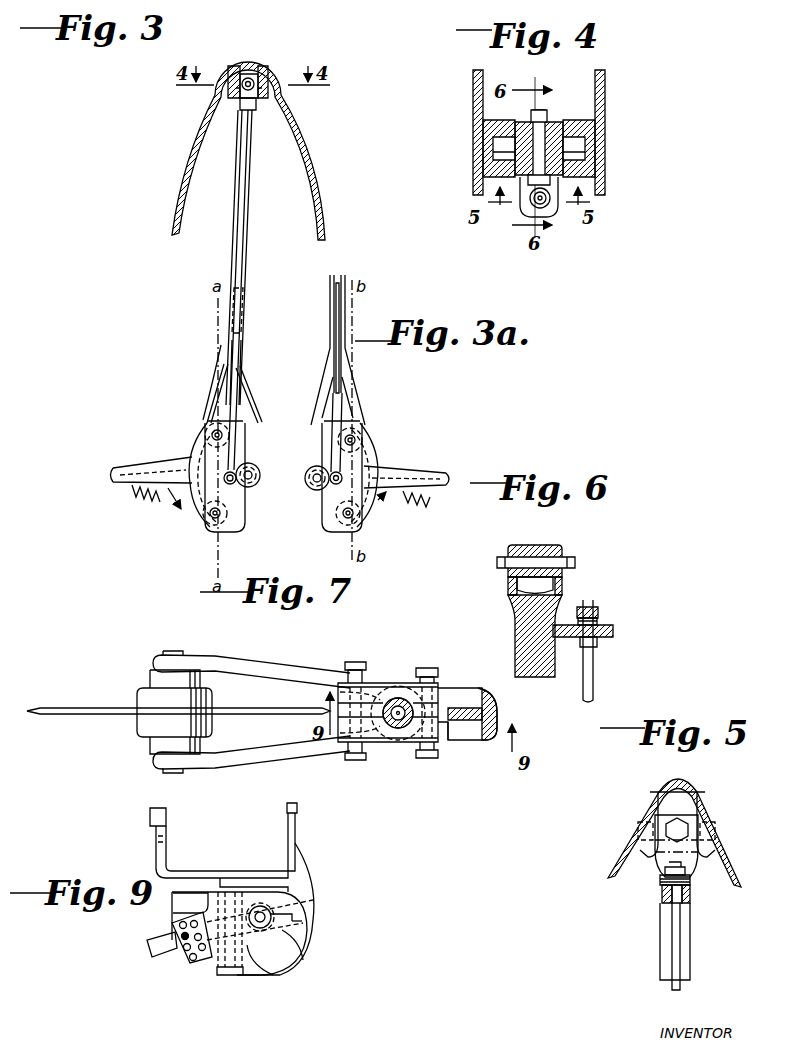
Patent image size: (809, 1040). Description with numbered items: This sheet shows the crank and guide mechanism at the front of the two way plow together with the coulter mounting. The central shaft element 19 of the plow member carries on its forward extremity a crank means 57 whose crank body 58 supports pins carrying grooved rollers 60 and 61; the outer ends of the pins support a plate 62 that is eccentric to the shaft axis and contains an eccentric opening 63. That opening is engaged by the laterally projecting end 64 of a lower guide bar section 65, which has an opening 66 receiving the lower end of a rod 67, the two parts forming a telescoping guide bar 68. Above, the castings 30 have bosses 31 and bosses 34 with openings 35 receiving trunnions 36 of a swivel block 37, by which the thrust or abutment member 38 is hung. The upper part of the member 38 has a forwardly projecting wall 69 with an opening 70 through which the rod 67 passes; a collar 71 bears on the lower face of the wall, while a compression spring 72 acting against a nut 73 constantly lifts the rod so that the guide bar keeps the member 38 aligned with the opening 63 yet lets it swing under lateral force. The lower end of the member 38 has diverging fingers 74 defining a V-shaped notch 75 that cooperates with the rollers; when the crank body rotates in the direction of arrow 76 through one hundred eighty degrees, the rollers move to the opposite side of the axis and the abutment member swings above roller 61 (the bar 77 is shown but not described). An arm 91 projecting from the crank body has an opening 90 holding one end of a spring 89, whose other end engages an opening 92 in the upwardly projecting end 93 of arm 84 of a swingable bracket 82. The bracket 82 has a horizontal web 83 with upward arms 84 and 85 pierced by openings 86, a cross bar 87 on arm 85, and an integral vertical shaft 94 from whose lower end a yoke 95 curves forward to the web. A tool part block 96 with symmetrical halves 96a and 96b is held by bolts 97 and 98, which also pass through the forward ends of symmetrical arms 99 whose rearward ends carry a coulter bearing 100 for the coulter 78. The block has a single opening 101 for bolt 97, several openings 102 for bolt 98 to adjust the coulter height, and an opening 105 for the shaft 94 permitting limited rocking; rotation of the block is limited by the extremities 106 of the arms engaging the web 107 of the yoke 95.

In FIG. 3, the central shaft element 19 is at (257, 470).
In FIG. 3A, the central shaft element 19 is at (316, 491).
In FIG. 3, the castings 30 is at (186, 184).
In FIG. 5, the bosses 31 is at (618, 862).
In FIG. 3, the bosses 34 is at (232, 72).
In FIG. 4, the bosses 34 is at (474, 131).
In FIG. 5, the bosses 34 is at (648, 815).
In FIG. 4, the openings 35 is at (492, 157).
In FIG. 3, the trunnions 36 is at (266, 96).
In FIG. 4, the trunnions 36 is at (500, 149).
In FIG. 5, the trunnions 36 is at (638, 833).
In FIG. 4, the swivel block 37 is at (553, 136).
In FIG. 6, the swivel block 37 is at (540, 546).
In FIG. 3, the thrust member or abutment member 38 is at (251, 192).
In FIG. 6, the thrust member or abutment member 38 is at (522, 636).
In FIG. 5, the thrust member or abutment member 38 is at (690, 937).
In FIG. 3, the crank means 57 is at (164, 467).
In FIG. 3A, the crank means 57 is at (382, 474).
In FIG. 3, the crank body 58 is at (197, 497).
In FIG. 3A, the crank body 58 is at (376, 464).
In FIG. 3, the roller 60 is at (206, 434).
In FIG. 3A, the roller 60 is at (358, 520).
In FIG. 3, the roller 61 is at (205, 524).
In FIG. 3A, the roller 61 is at (358, 438).
In FIG. 3, the plate 62 is at (228, 533).
In FIG. 3A, the plate 62 is at (330, 533).
In FIG. 3, the eccentric opening 63 is at (236, 497).
In FIG. 3, the laterally projecting end 64 is at (224, 476).
In FIG. 3, the guide bar section 65 is at (239, 364).
In FIG. 3, the opening 66 is at (244, 326).
In FIG. 3, the rod 67 is at (247, 235).
In FIG. 4, the rod 67 is at (533, 205).
In FIG. 6, the rod 67 is at (594, 678).
In FIG. 5, the rod 67 is at (675, 958).
In FIG. 3, the telescoping guide bar 68 is at (234, 250).
In FIG. 3A, the telescoping guide bar 68 is at (333, 313).
In FIG. 3, the forwardly projecting wall 69 is at (240, 104).
In FIG. 6, the forwardly projecting wall 69 is at (613, 630).
In FIG. 5, the forwardly projecting wall 69 is at (661, 899).
In FIG. 6, the opening 70 is at (603, 627).
In FIG. 5, the opening 70 is at (691, 895).
In FIG. 6, the collar 71 is at (598, 642).
In FIG. 6, the compression spring 72 is at (579, 617).
In FIG. 5, the compression spring 72 is at (660, 881).
In FIG. 6, the nut 73 is at (594, 608).
In FIG. 3, the diverging fingers 74 is at (252, 402).
In FIG. 3, the V-shaped notch 75 is at (219, 384).
In FIG. 3, the arrow 76 is at (180, 548).
In FIG. 3, the link bar 77 is at (212, 400).
In FIG. 7, the coulter wheel or disc 78 is at (48, 712).
In FIG. 9, the swingable bracket 82 is at (306, 895).
In FIG. 9, the horizontal web 83 is at (190, 884).
In FIG. 9, the arm 84 is at (300, 866).
In FIG. 9, the arm 85 is at (158, 862).
In FIG. 9, the openings 86 is at (165, 842).
In FIG. 9, the cross bar 87 is at (150, 812).
In FIG. 3, the spring 89 is at (132, 497).
In FIG. 3A, the spring 89 is at (424, 501).
In FIG. 3, the opening 90 is at (113, 478).
In FIG. 3A, the opening 90 is at (455, 480).
In FIG. 3, the arm 91 is at (130, 467).
In FIG. 3A, the arm 91 is at (440, 472).
In FIG. 9, the opening 92 is at (297, 810).
In FIG. 9, the upwardly projecting end 93 is at (287, 806).
In FIG. 7, the vertical shaft or column 94 is at (397, 700).
In FIG. 9, the vertical shaft or column 94 is at (230, 977).
In FIG. 7, the yoke 95 is at (498, 699).
In FIG. 9, the yoke 95 is at (308, 946).
In FIG. 9, the tool part block 96 is at (263, 977).
In FIG. 7, the block half 96a is at (368, 690).
In FIG. 9, the block half 96a is at (180, 910).
In FIG. 7, the block half 96b is at (380, 741).
In FIG. 7, the bolt 97 is at (430, 670).
In FIG. 9, the bolt 97 is at (271, 913).
In FIG. 7, the bolt 98 is at (350, 664).
In FIG. 9, the bolt 98 is at (184, 945).
In FIG. 7, the symmetrical arms 99 is at (264, 668).
In FIG. 9, the symmetrical arms 99 is at (152, 950).
In FIG. 7, the coulter bearing 100 is at (147, 744).
In FIG. 9, the single opening 101 is at (294, 922).
In FIG. 9, the openings 102 is at (193, 962).
In FIG. 9, the opening 105 is at (248, 905).
In FIG. 7, the extremities 106 is at (456, 704).
In FIG. 9, the extremities 106 is at (282, 917).
In FIG. 7, the web 107 is at (466, 736).
In FIG. 9, the web 107 is at (286, 933).